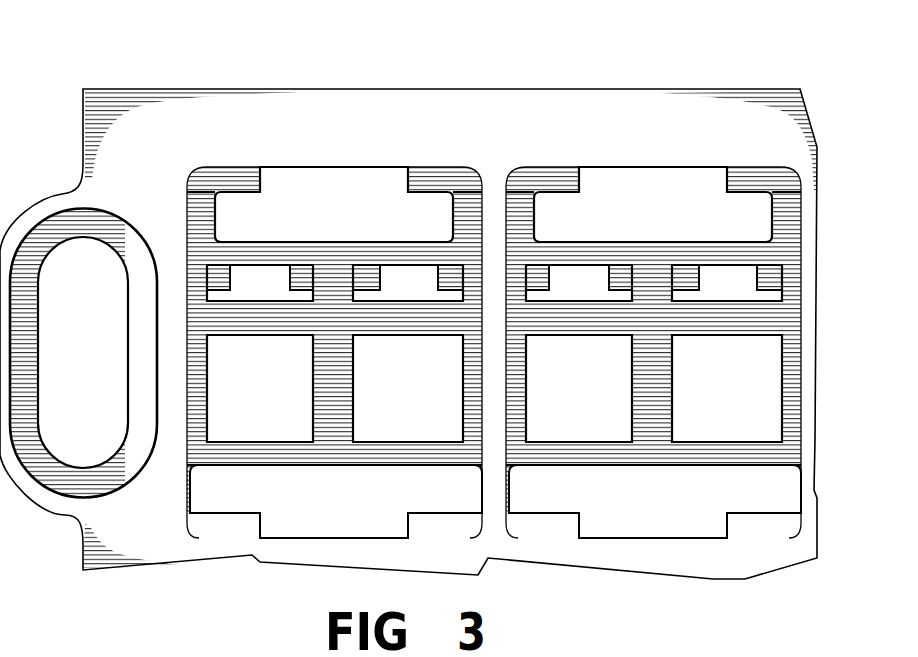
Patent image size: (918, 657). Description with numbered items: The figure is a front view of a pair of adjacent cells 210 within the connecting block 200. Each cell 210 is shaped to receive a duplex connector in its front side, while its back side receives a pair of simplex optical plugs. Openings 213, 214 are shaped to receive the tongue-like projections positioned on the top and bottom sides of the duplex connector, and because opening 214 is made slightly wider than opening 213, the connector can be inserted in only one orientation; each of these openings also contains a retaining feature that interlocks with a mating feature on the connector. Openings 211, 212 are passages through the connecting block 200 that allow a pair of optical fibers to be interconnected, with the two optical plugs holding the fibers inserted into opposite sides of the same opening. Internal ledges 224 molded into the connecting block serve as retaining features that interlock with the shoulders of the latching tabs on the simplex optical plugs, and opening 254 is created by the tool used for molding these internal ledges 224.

The connecting block 200 is at (126, 46).
The cell 210 is at (263, 108).
The opening 211 is at (244, 400).
The opening 212 is at (392, 400).
The opening 213 is at (352, 225).
The opening 214 is at (318, 507).
The internal ledges 224 is at (298, 278).
The opening 254 is at (244, 294).